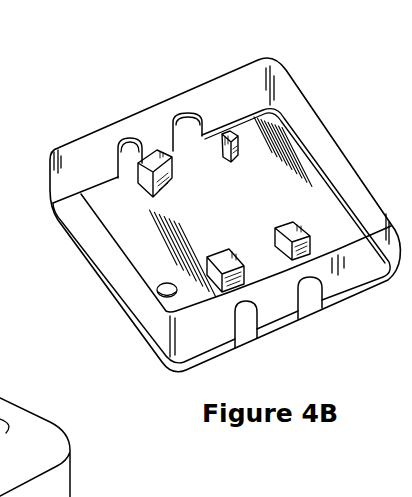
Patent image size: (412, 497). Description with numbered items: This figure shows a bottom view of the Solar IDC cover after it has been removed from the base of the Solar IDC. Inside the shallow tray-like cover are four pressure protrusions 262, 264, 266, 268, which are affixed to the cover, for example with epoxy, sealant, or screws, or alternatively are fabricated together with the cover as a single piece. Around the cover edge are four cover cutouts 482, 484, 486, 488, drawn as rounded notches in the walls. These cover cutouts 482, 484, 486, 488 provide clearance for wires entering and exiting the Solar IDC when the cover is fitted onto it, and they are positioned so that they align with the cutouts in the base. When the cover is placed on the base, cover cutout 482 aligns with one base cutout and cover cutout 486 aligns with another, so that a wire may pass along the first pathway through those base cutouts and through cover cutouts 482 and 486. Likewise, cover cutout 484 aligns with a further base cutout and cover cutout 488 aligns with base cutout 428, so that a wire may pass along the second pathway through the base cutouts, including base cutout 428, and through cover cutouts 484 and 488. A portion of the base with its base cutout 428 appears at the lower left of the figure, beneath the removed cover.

The pressure protrusion 262 is at (135, 188).
The pressure protrusion 264 is at (206, 273).
The pressure protrusion 266 is at (237, 146).
The pressure protrusion 268 is at (308, 236).
The base cutout 428 is at (0, 368).
The cover cutout 482 is at (127, 147).
The cover cutout 484 is at (193, 132).
The cover cutout 486 is at (250, 324).
The cover cutout 488 is at (311, 304).